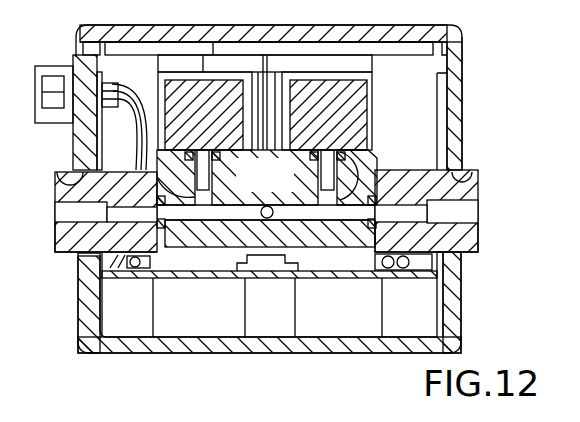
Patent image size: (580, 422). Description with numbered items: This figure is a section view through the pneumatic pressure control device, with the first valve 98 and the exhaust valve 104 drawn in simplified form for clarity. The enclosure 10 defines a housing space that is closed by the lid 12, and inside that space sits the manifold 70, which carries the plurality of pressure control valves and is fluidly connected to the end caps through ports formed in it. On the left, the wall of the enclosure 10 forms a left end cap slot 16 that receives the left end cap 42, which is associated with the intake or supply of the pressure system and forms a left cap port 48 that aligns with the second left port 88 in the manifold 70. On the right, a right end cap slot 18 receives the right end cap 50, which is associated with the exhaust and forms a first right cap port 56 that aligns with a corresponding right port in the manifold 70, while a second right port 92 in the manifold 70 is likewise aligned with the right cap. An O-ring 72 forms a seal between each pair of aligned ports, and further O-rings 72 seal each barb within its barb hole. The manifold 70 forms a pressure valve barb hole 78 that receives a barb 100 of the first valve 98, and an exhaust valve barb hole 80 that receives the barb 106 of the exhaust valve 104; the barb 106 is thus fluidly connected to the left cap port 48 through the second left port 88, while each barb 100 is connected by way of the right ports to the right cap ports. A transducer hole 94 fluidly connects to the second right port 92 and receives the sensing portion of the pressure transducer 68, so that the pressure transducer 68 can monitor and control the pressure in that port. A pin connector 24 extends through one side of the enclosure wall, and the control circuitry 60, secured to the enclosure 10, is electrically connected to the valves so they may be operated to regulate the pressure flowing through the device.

The enclosure 10 is at (458, 78).
The lid 12 is at (434, 29).
The pin connector 24 is at (65, 72).
The first valve 98 is at (173, 83).
The exhaust valve 104 is at (363, 113).
The O-ring 72 is at (189, 151).
The pressure valve barb hole 78 is at (157, 166).
The barb 106 is at (306, 176).
The barb 100 is at (213, 167).
The exhaust valve barb hole 80 is at (376, 158).
The left end cap slot 16 is at (62, 182).
The left cap port 48 is at (62, 213).
The left end cap 42 is at (65, 256).
The right end cap slot 18 is at (480, 174).
The first right cap port 56 is at (474, 213).
The right end cap 50 is at (473, 238).
The second left port 88 is at (213, 216).
The transducer hole 94 is at (232, 216).
The manifold 70 is at (302, 238).
The second right port 92 is at (330, 226).
The pressure transducer 68 is at (267, 263).
The control circuitry 60 is at (145, 278).